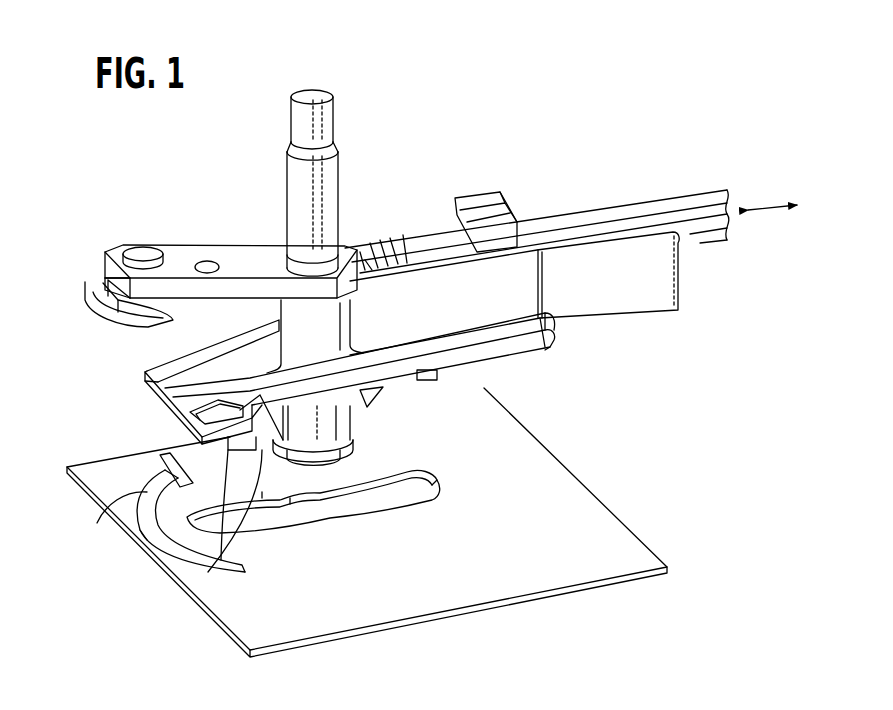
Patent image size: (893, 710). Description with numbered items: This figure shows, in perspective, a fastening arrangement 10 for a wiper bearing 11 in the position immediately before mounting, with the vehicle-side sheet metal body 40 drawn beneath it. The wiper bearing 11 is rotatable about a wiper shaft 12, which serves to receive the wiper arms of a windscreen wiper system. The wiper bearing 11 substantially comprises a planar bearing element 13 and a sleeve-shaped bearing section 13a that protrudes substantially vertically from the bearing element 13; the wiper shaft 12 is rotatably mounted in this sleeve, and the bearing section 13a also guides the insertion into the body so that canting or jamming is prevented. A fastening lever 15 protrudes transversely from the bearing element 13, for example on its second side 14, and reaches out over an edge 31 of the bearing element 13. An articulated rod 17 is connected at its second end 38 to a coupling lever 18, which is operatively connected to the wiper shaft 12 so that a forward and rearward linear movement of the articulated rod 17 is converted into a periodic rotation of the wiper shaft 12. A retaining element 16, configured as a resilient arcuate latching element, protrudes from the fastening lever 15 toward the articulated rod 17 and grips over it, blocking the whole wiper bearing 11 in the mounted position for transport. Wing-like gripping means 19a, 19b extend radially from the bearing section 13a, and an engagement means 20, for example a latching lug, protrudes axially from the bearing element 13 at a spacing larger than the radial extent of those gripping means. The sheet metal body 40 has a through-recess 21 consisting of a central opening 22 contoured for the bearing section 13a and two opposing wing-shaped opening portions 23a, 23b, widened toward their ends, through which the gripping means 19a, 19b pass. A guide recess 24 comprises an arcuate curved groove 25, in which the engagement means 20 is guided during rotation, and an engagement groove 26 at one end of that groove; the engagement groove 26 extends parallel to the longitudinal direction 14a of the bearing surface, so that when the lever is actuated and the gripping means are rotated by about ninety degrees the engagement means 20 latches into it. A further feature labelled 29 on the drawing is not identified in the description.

The fastening arrangement 10 is at (80, 388).
The wiper bearing 11 is at (567, 353).
The wiper shaft 12 is at (327, 128).
The bearing element 13 is at (553, 355).
The bearing section 13a is at (327, 420).
The second side 14 is at (520, 347).
The longitudinal direction 14a is at (170, 358).
The fastening lever 15 is at (650, 283).
The retaining element 16 is at (490, 215).
The articulated rod 17 is at (670, 208).
The coupling lever 18 is at (233, 257).
The wing-like gripping means 19a is at (200, 567).
The wing-like gripping means 19b is at (413, 380).
The engagement means 20 is at (177, 543).
The through-recess 21 is at (323, 512).
The central opening 22 is at (320, 520).
The wing-shaped opening portion 23a is at (307, 510).
The wing-shaped opening portion 23b is at (427, 493).
The guide recess 24 is at (125, 508).
The arcuate curved groove 25 is at (147, 540).
The engagement groove 26 is at (130, 465).
The recess 29 is at (150, 408).
The edge 31 is at (550, 328).
The second end 38 is at (103, 287).
The sheet metal body 40 is at (590, 538).